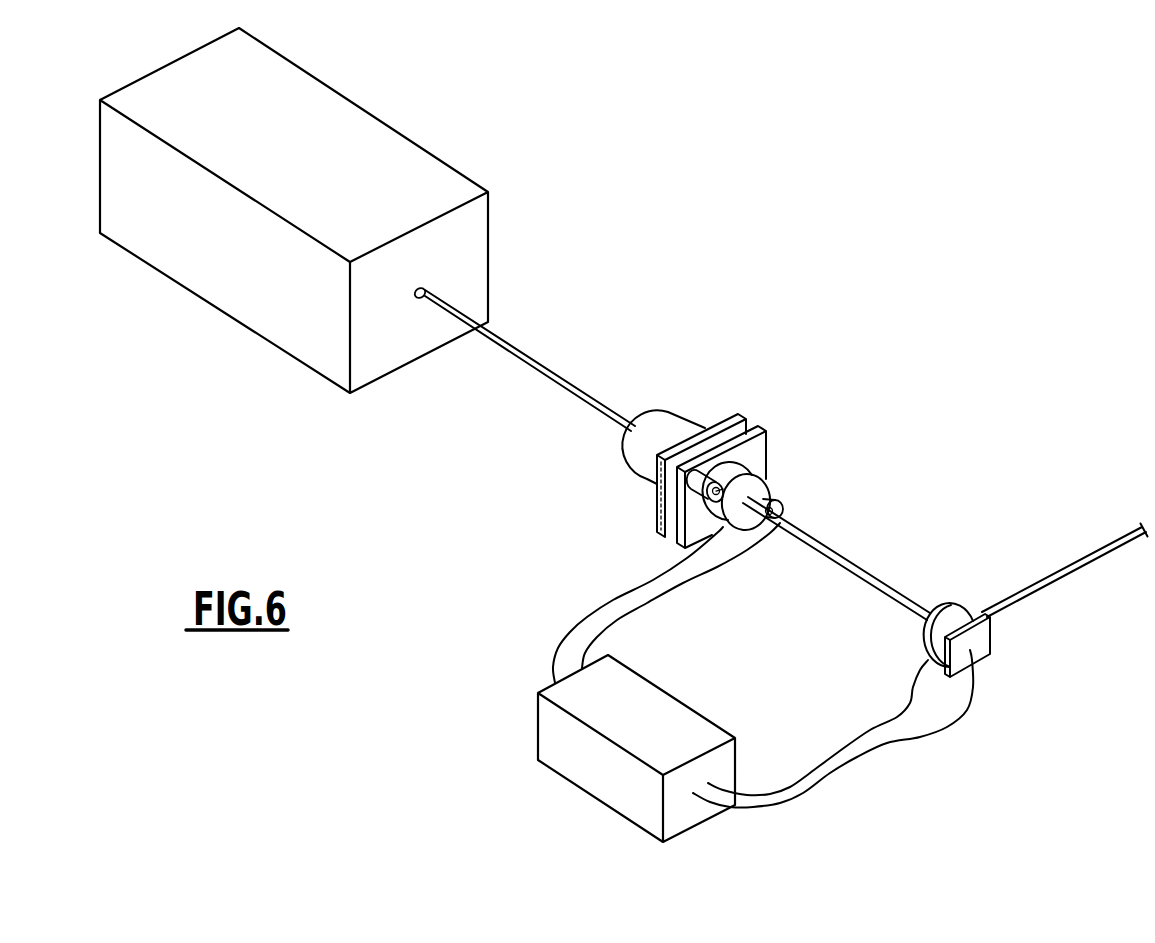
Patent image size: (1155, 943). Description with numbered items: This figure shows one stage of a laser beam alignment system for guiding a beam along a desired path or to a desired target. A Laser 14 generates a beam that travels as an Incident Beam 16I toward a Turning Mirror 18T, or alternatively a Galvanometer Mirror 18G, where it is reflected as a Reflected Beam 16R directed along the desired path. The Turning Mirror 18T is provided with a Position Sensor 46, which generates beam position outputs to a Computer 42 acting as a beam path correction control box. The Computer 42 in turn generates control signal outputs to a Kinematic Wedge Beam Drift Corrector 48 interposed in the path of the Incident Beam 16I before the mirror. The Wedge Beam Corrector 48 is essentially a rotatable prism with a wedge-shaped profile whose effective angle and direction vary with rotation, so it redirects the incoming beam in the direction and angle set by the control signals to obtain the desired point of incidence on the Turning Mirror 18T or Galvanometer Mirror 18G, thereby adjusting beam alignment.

The laser 14 is at (457, 167).
The kinematic wedge beam drift corrector 48 is at (614, 558).
The incident beam 16I is at (880, 583).
The turning mirror 18T is at (880, 635).
The galvanometer mirror 18G is at (927, 648).
The position sensor 46 is at (993, 637).
The reflected beam 16R is at (1073, 575).
The computer 42 is at (538, 725).